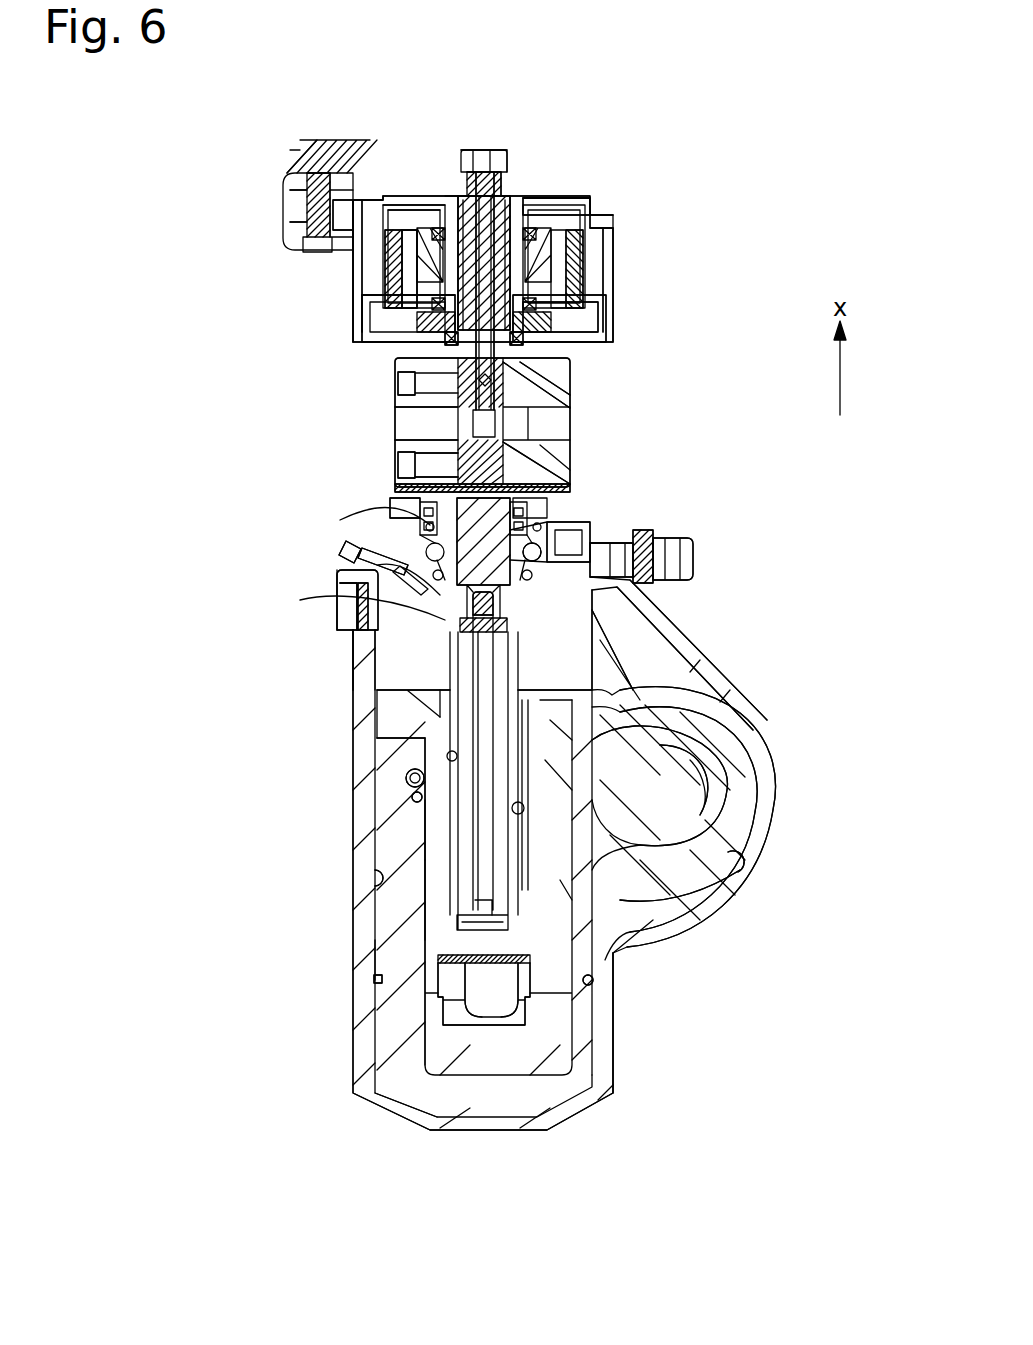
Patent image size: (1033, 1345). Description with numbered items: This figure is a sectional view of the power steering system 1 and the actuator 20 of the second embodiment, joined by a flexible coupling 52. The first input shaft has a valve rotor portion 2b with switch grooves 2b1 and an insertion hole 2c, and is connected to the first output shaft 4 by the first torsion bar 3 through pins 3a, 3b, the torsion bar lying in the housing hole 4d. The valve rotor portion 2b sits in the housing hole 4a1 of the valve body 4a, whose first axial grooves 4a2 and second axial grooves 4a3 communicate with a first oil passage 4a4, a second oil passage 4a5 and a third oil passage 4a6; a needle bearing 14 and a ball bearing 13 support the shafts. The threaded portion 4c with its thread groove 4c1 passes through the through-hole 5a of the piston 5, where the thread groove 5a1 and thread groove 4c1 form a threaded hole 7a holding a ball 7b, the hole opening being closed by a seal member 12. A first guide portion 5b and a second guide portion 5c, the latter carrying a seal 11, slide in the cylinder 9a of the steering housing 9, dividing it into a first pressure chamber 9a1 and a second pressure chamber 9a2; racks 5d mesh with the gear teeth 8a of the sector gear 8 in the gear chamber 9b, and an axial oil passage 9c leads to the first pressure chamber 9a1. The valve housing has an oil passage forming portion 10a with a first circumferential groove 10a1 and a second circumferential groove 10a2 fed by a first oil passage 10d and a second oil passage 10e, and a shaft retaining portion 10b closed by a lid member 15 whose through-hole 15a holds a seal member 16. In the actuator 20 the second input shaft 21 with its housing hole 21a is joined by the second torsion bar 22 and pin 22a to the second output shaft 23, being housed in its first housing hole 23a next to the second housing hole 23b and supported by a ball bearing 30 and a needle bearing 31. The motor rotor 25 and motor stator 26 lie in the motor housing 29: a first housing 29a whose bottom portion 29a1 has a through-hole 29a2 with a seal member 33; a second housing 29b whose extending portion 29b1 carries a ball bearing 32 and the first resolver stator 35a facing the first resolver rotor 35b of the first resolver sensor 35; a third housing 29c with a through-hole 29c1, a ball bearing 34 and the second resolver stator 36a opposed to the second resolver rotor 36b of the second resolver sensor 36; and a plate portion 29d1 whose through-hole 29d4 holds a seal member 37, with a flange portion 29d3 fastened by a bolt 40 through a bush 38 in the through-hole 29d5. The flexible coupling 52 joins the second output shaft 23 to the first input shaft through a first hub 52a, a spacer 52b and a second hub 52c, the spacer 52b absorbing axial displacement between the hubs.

The power steering system 1 is at (627, 1065).
The valve rotor portion 2b is at (522, 503).
The switch grooves 2b1 is at (655, 521).
The insertion hole 2c is at (655, 662).
The first torsion bar 3 is at (420, 720).
The pin 3a is at (520, 638).
The pin 3b is at (594, 977).
The first output shaft 4 is at (455, 630).
The valve body 4a is at (337, 566).
The housing hole 4a1 is at (450, 487).
The first axial grooves 4a2 is at (362, 614).
The second axial grooves 4a3 is at (617, 590).
The first oil passage 4a4 is at (335, 594).
The second oil passage 4a5 is at (465, 615).
The third oil passage 4a6 is at (655, 636).
The threaded portion 4c is at (410, 776).
The thread groove 4c1 is at (425, 832).
The housing hole 4d is at (430, 900).
The piston 5 is at (398, 995).
The through-hole 5a is at (465, 1020).
The thread groove 5a1 is at (418, 796).
The first guide portion 5b is at (385, 720).
The second guide portion 5c is at (377, 958).
The racks 5d is at (700, 745).
The threaded hole 7a is at (677, 698).
The ball 7b is at (687, 828).
The sector gear 8 is at (713, 795).
The gear teeth 8a is at (717, 891).
The steering housing 9 is at (348, 779).
The cylinder 9a is at (370, 878).
The first pressure chamber 9a1 is at (387, 1061).
The second pressure chamber 9a2 is at (355, 652).
The gear chamber 9b is at (738, 860).
The axial oil passage 9c is at (353, 630).
The oil passage forming portion 10a is at (622, 618).
The first circumferential groove 10a1 is at (362, 625).
The second circumferential groove 10a2 is at (350, 586).
The shaft retaining portion 10b is at (693, 568).
The first oil passage 10d is at (662, 584).
The second oil passage 10e is at (362, 572).
The seal 11 is at (376, 980).
The seal member 12 is at (503, 1020).
The ball bearing 13 is at (340, 548).
The needle bearing 14 is at (540, 548).
The lid member 15 is at (530, 485).
The through-hole 15a is at (423, 480).
The seal member 16 is at (400, 522).
The actuator 20 is at (509, 150).
The second input shaft 21 is at (500, 198).
The housing hole 21a is at (487, 149).
The second torsion bar 22 is at (592, 240).
The pin 22a is at (482, 197).
The second output shaft 23 is at (575, 355).
The first housing hole 23a is at (357, 244).
The second housing hole 23b is at (380, 283).
The motor rotor 25 is at (385, 240).
The motor stator 26 is at (390, 262).
The motor housing 29 is at (622, 273).
The first housing 29a is at (366, 190).
The bottom portion 29a1 is at (570, 222).
The through-hole 29a2 is at (452, 192).
The second housing 29b is at (622, 253).
The extending portion 29b1 is at (565, 222).
The third housing 29c is at (348, 311).
The through-hole 29c1 is at (385, 292).
The plate portion 29d1 is at (560, 345).
The flange portion 29d3 is at (367, 181).
The through-hole 29d4 is at (540, 362).
The through-hole 29d5 is at (306, 205).
The ball bearing 30 is at (583, 200).
The needle bearing 31 is at (590, 268).
The ball bearing 32 is at (592, 222).
The seal member 33 is at (534, 196).
The ball bearing 34 is at (603, 283).
The first resolver sensor 35 is at (403, 220).
The first resolver stator 35a is at (453, 203).
The first resolver rotor 35b is at (437, 181).
The second resolver sensor 36 is at (410, 326).
The second resolver stator 36a is at (600, 334).
The second resolver rotor 36b is at (585, 315).
The seal member 37 is at (400, 340).
The bush 38 is at (295, 215).
The bolt 40 is at (340, 225).
The flexible coupling 52 is at (585, 434).
The first hub 52a is at (400, 423).
The spacer 52b is at (395, 445).
The second hub 52c is at (395, 468).